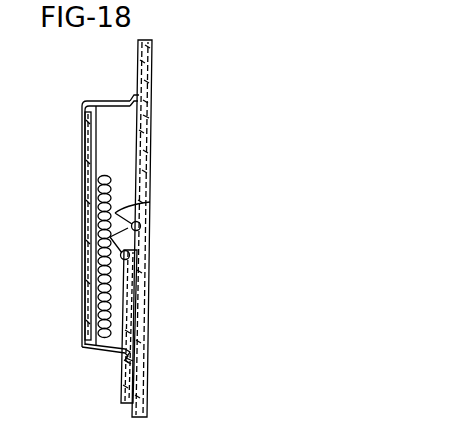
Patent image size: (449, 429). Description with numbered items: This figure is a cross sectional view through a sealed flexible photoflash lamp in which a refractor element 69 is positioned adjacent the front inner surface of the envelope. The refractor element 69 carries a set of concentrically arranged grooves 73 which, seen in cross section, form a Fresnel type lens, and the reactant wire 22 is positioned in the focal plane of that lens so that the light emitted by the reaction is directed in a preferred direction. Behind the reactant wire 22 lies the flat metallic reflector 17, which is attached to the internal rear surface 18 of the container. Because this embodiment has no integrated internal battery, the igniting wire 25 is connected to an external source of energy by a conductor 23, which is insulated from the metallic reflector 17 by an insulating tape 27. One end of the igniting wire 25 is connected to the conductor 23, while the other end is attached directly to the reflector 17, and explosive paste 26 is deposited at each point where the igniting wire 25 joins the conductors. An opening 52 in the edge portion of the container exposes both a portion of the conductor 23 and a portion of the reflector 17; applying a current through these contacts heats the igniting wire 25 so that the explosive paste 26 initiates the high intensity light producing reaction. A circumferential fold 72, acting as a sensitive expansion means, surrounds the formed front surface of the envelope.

The reflector 17 is at (153, 126).
The internal rear surface 18 is at (152, 68).
The reactant wire 22 is at (112, 178).
The conductor 23 is at (134, 292).
The igniting wire 25 is at (152, 202).
The explosive paste 26 is at (118, 268).
The insulating tape 27 is at (138, 331).
The opening 52 is at (128, 376).
The refractor element 69 is at (82, 119).
The circumferential fold 72 is at (130, 97).
The grooves 73 is at (84, 180).